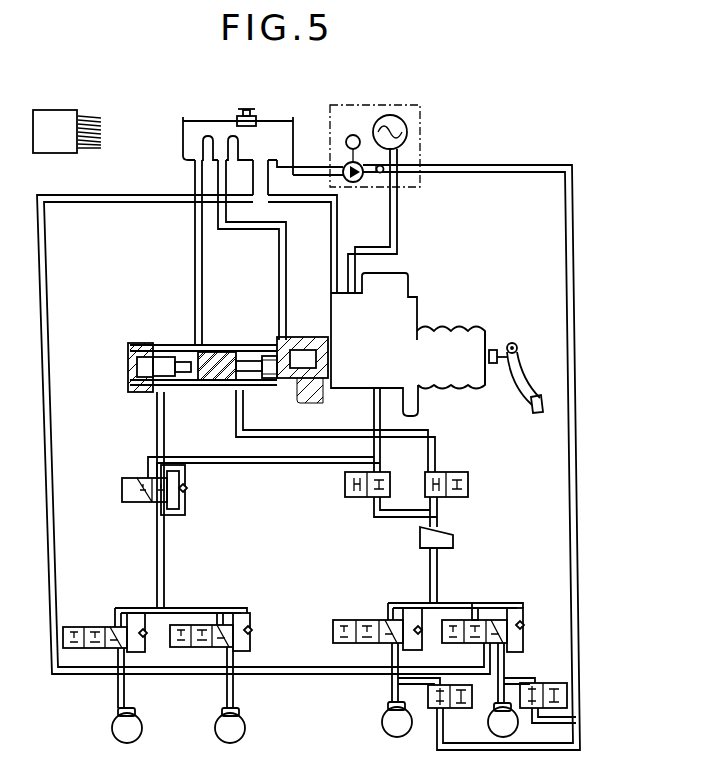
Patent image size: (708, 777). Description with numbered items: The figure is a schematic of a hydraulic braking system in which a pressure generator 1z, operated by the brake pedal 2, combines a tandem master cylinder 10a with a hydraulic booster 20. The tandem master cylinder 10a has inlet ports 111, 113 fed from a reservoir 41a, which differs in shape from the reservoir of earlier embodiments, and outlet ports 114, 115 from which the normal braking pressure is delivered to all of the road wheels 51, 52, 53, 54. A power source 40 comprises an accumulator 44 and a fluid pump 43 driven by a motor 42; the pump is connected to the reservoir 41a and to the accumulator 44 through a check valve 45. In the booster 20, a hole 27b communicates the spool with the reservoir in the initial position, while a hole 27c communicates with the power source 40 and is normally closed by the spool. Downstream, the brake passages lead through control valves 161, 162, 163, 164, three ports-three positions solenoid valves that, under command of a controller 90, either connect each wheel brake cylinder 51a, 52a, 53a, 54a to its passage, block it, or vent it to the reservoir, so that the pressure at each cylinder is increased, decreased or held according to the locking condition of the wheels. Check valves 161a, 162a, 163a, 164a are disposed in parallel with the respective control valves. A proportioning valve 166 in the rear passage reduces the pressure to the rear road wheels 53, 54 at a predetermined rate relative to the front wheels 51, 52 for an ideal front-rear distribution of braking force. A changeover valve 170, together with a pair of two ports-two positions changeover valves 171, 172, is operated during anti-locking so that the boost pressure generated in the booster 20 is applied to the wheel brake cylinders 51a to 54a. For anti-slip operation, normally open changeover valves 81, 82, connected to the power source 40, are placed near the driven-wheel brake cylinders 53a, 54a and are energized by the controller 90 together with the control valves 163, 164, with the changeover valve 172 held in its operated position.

The controller 90 is at (67, 154).
The reservoir 41a is at (184, 138).
The power source 40 is at (421, 110).
The motor 42 is at (352, 135).
The fluid pump 43 is at (353, 182).
The accumulator 44 is at (388, 115).
The check valve 45 is at (380, 174).
The hole 27b is at (336, 288).
The hole 27c is at (350, 286).
The hydraulic booster 20 is at (408, 329).
The pressure generator 1z is at (421, 318).
The brake pedal 2 is at (517, 393).
The tandem master cylinder 10a is at (228, 354).
The outlet port 114 is at (198, 343).
The inlet port 111 is at (284, 340).
The outlet port 115 is at (157, 391).
The inlet port 113 is at (237, 391).
The changeover valve 170 is at (122, 492).
The changeover valve 171 is at (345, 484).
The changeover valve 172 is at (468, 482).
The proportioning valve 166 is at (455, 538).
The control valve 161 is at (125, 628).
The control valve 162 is at (236, 628).
The control valve 163 is at (397, 621).
The control valve 164 is at (502, 615).
The check valve 161a is at (144, 637).
The check valve 162a is at (250, 635).
The check valve 163a is at (438, 645).
The check valve 164a is at (523, 623).
The changeover valve 81 is at (433, 713).
The changeover valve 82 is at (543, 680).
The road wheel 51 is at (147, 733).
The road wheel 52 is at (251, 732).
The road wheel 53 is at (377, 728).
The road wheel 54 is at (482, 738).
The wheel brake cylinder 51a is at (150, 707).
The wheel brake cylinder 52a is at (241, 712).
The wheel brake cylinder 53a is at (390, 705).
The wheel brake cylinder 54a is at (497, 708).